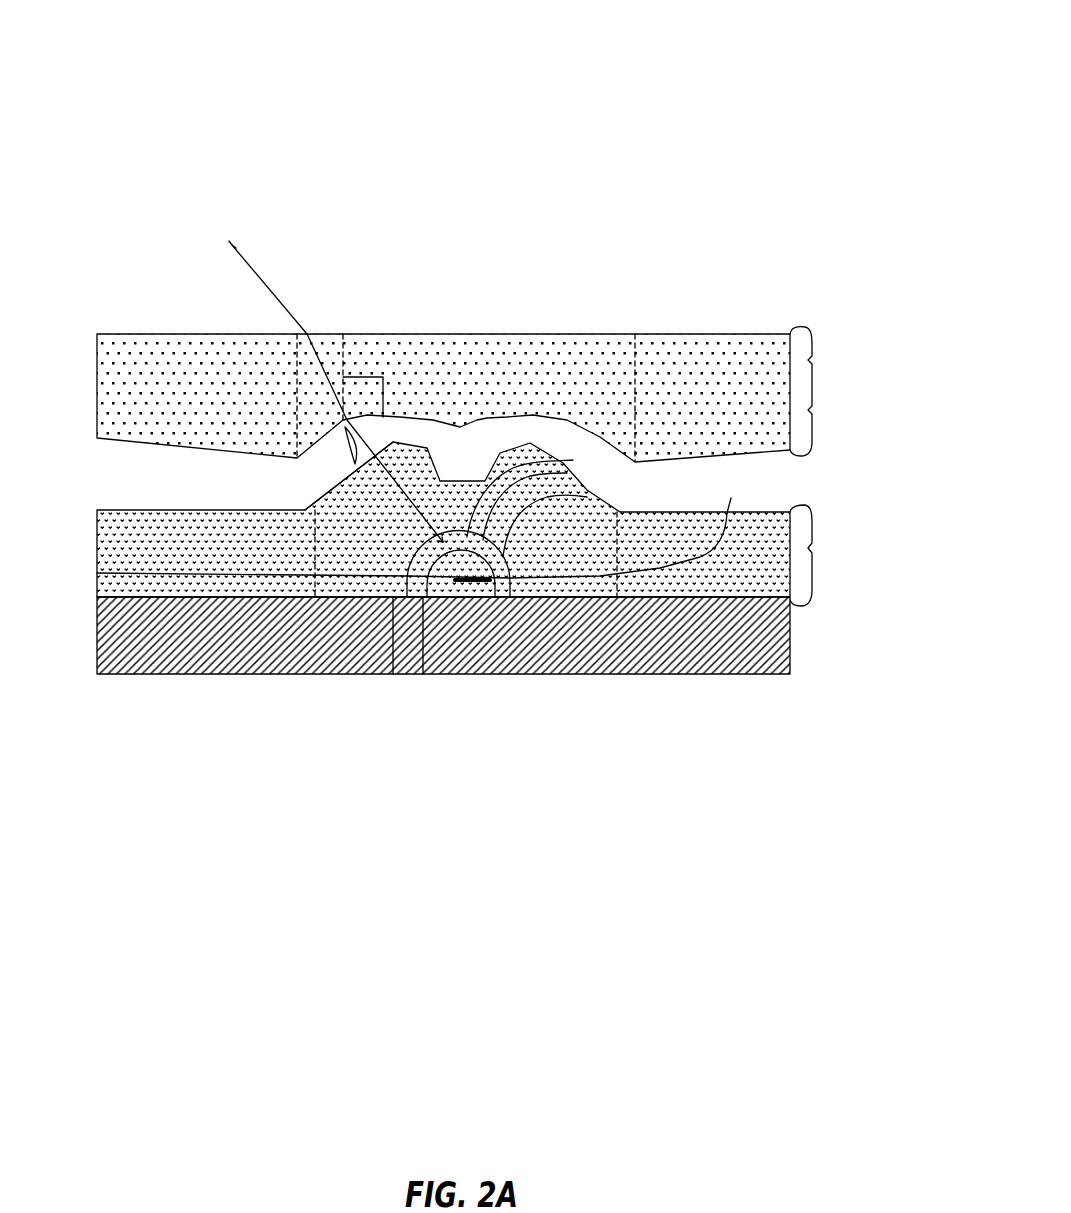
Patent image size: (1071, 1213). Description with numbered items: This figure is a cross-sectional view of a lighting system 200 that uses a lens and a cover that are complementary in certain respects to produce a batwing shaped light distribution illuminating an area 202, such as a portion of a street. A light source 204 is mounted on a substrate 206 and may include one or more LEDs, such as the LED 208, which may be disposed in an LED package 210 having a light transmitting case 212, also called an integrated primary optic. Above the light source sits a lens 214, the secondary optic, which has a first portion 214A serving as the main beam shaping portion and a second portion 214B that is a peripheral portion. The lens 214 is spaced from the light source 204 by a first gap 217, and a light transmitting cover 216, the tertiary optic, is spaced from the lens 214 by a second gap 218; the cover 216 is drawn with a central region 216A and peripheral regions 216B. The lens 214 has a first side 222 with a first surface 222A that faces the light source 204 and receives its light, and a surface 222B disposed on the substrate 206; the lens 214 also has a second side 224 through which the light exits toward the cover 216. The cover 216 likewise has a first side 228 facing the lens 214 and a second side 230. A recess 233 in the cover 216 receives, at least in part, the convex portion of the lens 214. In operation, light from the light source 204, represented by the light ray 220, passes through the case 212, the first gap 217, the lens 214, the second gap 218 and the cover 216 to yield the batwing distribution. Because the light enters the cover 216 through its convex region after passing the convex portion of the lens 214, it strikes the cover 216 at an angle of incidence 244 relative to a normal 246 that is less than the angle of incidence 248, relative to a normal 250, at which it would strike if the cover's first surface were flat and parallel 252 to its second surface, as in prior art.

The lighting system 200 is at (702, 188).
The area 202 is at (441, 33).
The light source 204 is at (573, 460).
The substrate 206 is at (93, 625).
The LED 208 is at (577, 528).
The LED package 210 is at (567, 473).
The case 212 is at (587, 497).
The lens 214 is at (93, 525).
The first portion 214A is at (466, 553).
The second portion 214B is at (472, 553).
The cover 216 is at (93, 383).
The upper dielectric central portion 216A is at (469, 377).
The upper dielectric peripheral portion 216B is at (460, 397).
The first gap 217 is at (95, 573).
The second gap 218 is at (118, 467).
The light ray 220 is at (270, 291).
The first side 222 is at (823, 564).
The first surface 222A is at (448, 632).
The surface 222B is at (391, 677).
The second side 224 is at (814, 555).
The first side 228 is at (823, 416).
The second side 230 is at (814, 391).
The recess 233 is at (467, 442).
The angle of incidence 244 is at (357, 436).
The normal 246 is at (338, 331).
The angle of incidence 248 is at (351, 473).
The normal 250 is at (348, 331).
The parallel 252 is at (473, 418).